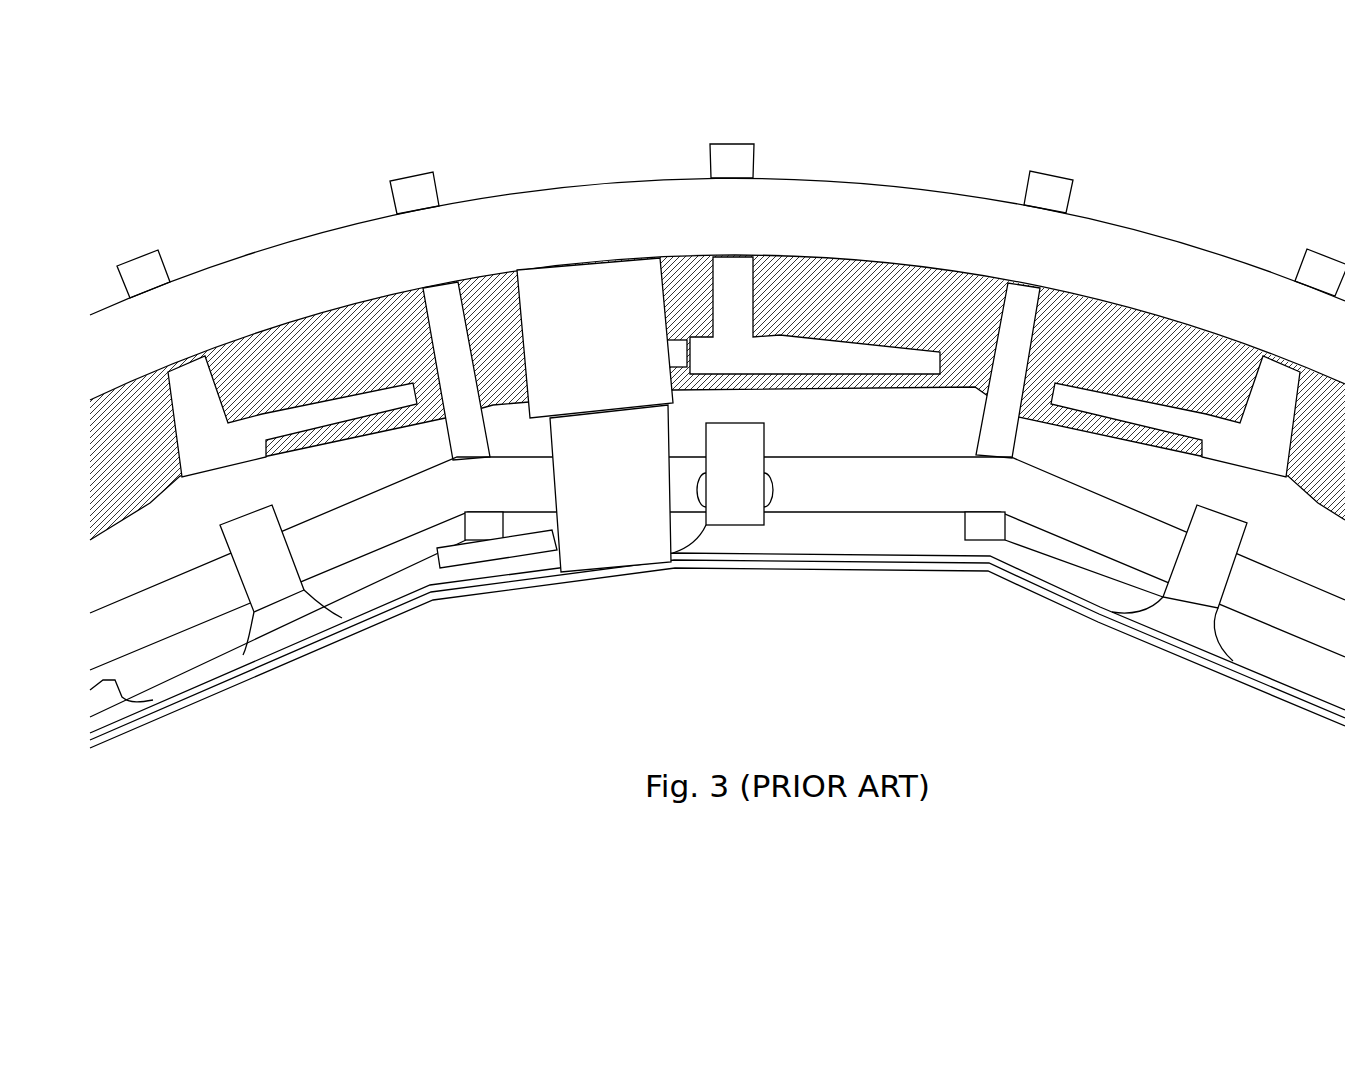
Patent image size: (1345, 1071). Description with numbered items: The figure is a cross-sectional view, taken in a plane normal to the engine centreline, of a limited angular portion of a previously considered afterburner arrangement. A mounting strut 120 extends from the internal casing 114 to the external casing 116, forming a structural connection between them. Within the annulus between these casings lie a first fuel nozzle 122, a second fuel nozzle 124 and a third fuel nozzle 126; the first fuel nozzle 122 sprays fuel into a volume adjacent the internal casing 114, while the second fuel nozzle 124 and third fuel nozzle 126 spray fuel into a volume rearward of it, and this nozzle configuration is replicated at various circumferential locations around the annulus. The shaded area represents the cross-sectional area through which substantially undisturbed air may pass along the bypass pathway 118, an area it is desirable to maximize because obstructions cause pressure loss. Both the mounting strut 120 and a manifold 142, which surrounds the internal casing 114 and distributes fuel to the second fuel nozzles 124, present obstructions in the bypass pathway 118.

The internal casing 114 is at (378, 615).
The external casing 116 is at (340, 248).
The bypass pathway 118 is at (913, 437).
The mounting strut 120 is at (583, 268).
The first fuel nozzle 122 is at (495, 565).
The second fuel nozzle 124 is at (733, 490).
The third fuel nozzle 126 is at (800, 340).
The manifold 142 is at (1146, 555).